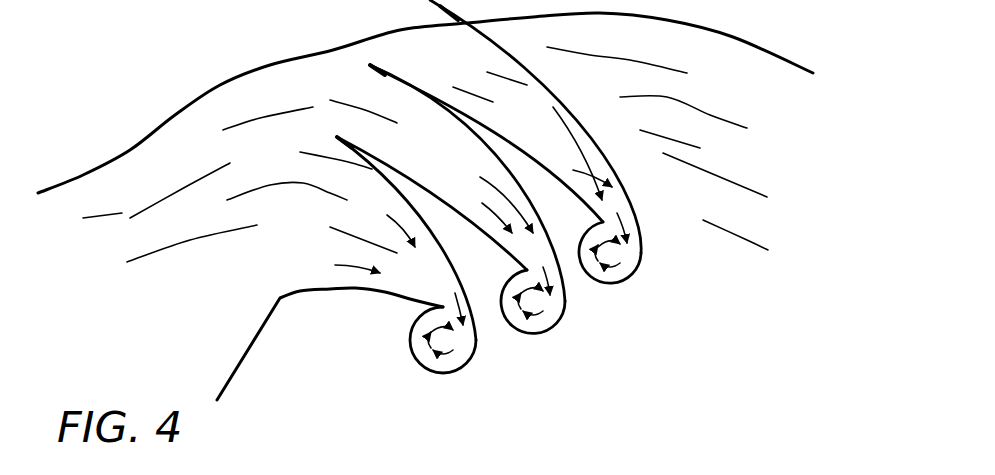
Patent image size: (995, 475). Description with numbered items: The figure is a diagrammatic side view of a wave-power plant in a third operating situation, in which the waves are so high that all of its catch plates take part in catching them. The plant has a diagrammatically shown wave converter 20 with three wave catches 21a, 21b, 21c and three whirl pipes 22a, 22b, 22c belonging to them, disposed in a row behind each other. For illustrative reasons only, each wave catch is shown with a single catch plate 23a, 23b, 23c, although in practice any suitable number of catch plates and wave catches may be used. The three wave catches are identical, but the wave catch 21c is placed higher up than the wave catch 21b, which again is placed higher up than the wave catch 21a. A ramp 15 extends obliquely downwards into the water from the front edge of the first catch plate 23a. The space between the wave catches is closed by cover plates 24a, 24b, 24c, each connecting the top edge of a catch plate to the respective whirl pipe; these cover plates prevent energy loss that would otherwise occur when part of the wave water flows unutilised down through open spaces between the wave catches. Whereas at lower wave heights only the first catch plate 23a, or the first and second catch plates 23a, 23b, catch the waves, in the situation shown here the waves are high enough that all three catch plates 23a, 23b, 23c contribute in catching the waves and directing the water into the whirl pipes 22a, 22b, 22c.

The ramp 15 is at (257, 330).
The wave converter 20 is at (488, 345).
The first wave catch 21a is at (445, 287).
The second wave catch 21b is at (470, 182).
The third wave catch 21c is at (557, 134).
The first whirl pipe 22a is at (418, 363).
The second whirl pipe 22b is at (520, 337).
The third whirl pipe 22c is at (613, 285).
The first catch plate 23a is at (333, 137).
The second catch plate 23b is at (371, 65).
The third catch plate 23c is at (441, 26).
The first cover plate 24a is at (385, 163).
The second cover plate 24b is at (410, 82).
The third cover plate 24c is at (558, 100).